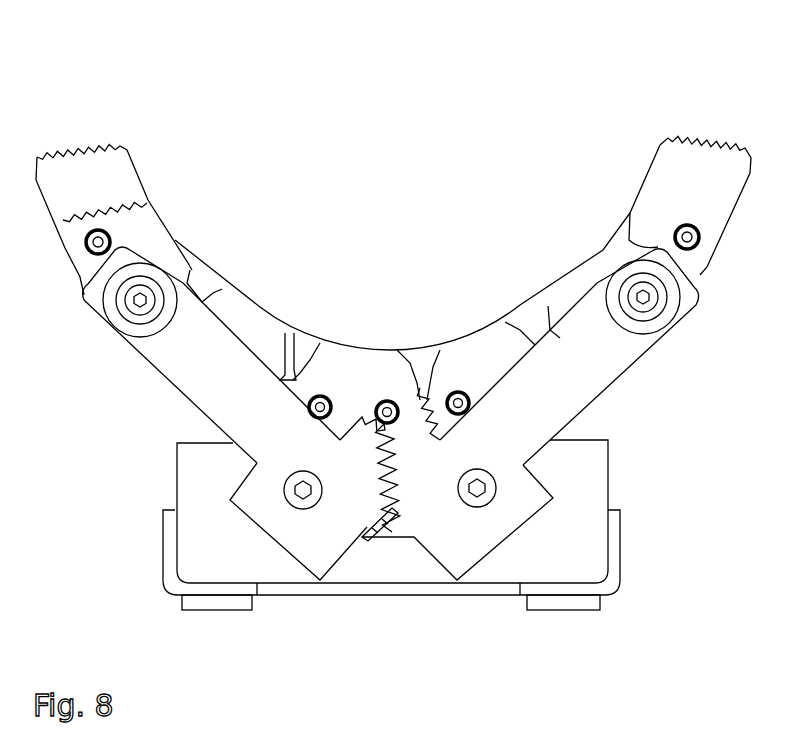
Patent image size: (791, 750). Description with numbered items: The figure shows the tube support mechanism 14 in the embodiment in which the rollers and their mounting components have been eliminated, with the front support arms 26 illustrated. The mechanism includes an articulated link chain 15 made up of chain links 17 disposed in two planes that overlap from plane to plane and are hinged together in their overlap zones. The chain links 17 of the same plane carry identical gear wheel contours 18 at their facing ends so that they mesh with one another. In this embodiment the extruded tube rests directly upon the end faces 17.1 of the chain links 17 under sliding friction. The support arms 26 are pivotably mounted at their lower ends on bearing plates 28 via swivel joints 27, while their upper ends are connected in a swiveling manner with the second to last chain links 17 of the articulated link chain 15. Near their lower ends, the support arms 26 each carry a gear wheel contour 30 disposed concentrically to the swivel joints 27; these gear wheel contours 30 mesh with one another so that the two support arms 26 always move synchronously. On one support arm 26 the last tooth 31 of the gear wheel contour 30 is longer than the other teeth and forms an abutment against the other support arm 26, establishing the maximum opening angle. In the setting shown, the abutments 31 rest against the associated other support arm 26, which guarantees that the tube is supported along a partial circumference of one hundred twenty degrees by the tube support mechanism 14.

The tube support mechanism 14 is at (592, 72).
The articulated link chain 15 is at (319, 316).
The chain links 17 is at (418, 357).
The end faces 17.1 is at (576, 275).
The gear wheel contours 18 is at (288, 378).
The support arms 26 is at (202, 388).
The swivel joints 27 is at (303, 492).
The bearing plates 28 is at (600, 482).
The gear wheel contour 30 is at (396, 505).
The last tooth 31 is at (381, 536).